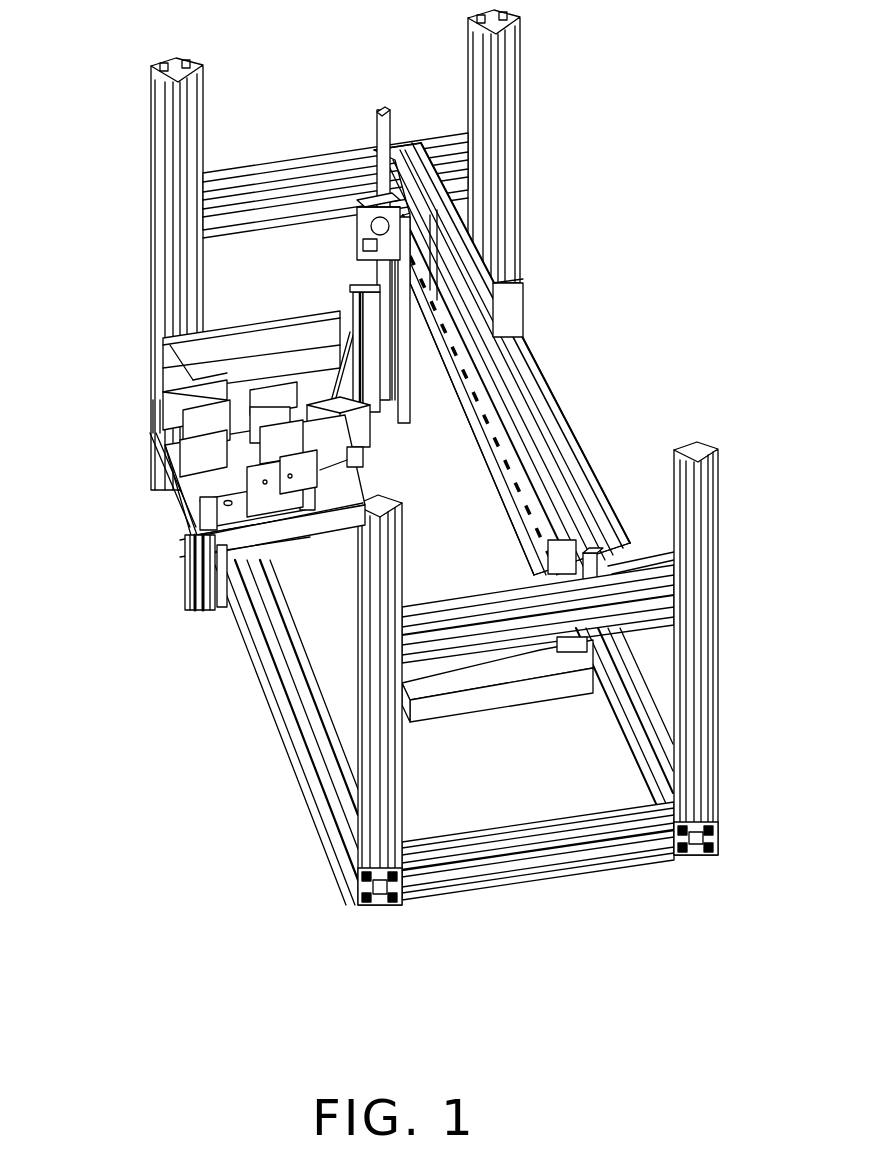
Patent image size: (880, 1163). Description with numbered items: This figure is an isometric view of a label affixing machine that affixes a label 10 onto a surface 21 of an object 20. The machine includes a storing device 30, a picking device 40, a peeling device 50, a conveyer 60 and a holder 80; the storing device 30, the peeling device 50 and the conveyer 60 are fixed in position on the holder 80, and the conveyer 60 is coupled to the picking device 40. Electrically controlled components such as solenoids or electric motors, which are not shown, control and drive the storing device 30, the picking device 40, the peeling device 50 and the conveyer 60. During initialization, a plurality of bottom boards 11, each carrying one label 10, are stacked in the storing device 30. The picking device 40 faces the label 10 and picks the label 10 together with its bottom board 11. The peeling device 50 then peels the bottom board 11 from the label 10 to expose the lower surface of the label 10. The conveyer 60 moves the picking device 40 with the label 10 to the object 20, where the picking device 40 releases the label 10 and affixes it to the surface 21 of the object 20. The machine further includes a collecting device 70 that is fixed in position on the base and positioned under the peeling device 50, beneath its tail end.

The label 10 is at (343, 462).
The bottom board 11 is at (292, 577).
The object 20 is at (523, 665).
The surface 21 is at (446, 672).
The storing device 30 is at (183, 580).
The picking device 40 is at (343, 383).
The peeling device 50 is at (250, 466).
The conveyer 60 is at (468, 405).
The collecting device 70 is at (462, 520).
The holder 80 is at (707, 593).